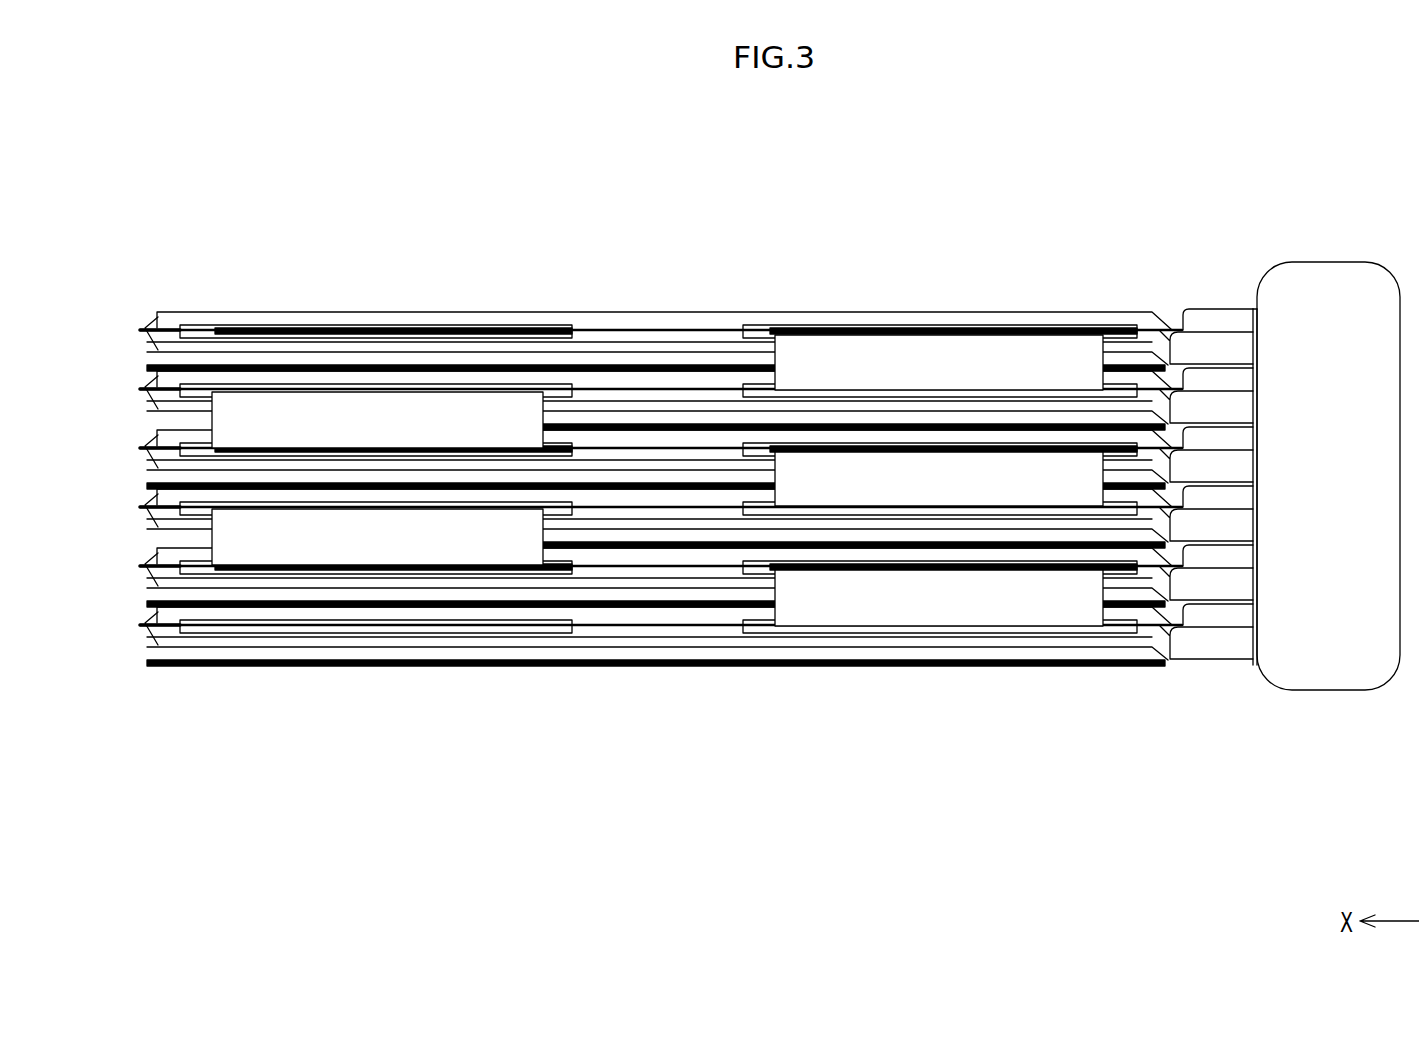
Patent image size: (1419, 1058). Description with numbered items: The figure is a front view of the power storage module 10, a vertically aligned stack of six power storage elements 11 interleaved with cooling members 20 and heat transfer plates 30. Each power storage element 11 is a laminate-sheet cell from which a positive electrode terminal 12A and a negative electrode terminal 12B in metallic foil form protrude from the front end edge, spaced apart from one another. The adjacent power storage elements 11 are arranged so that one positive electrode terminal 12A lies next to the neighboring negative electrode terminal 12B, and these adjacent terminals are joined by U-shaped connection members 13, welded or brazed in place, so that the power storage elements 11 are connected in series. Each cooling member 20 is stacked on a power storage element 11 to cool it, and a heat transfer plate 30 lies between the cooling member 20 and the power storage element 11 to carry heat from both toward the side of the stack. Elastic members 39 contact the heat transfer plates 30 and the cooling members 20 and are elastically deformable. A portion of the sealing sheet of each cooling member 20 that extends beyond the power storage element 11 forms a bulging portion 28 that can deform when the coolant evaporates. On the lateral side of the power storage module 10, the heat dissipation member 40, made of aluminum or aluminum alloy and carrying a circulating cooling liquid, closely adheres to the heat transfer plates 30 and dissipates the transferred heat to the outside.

The power storage module 10 is at (1180, 166).
The power storage element 11 is at (150, 328).
The positive electrode terminal 12A is at (338, 330).
The negative electrode terminal 12B is at (385, 392).
The connection member 13 is at (280, 548).
The cooling member 20 is at (630, 478).
The bulging portion 28 is at (1240, 463).
The heat transfer plate 30 is at (698, 487).
The elastic member 39 is at (1207, 437).
The heat dissipation member 40 is at (1360, 292).